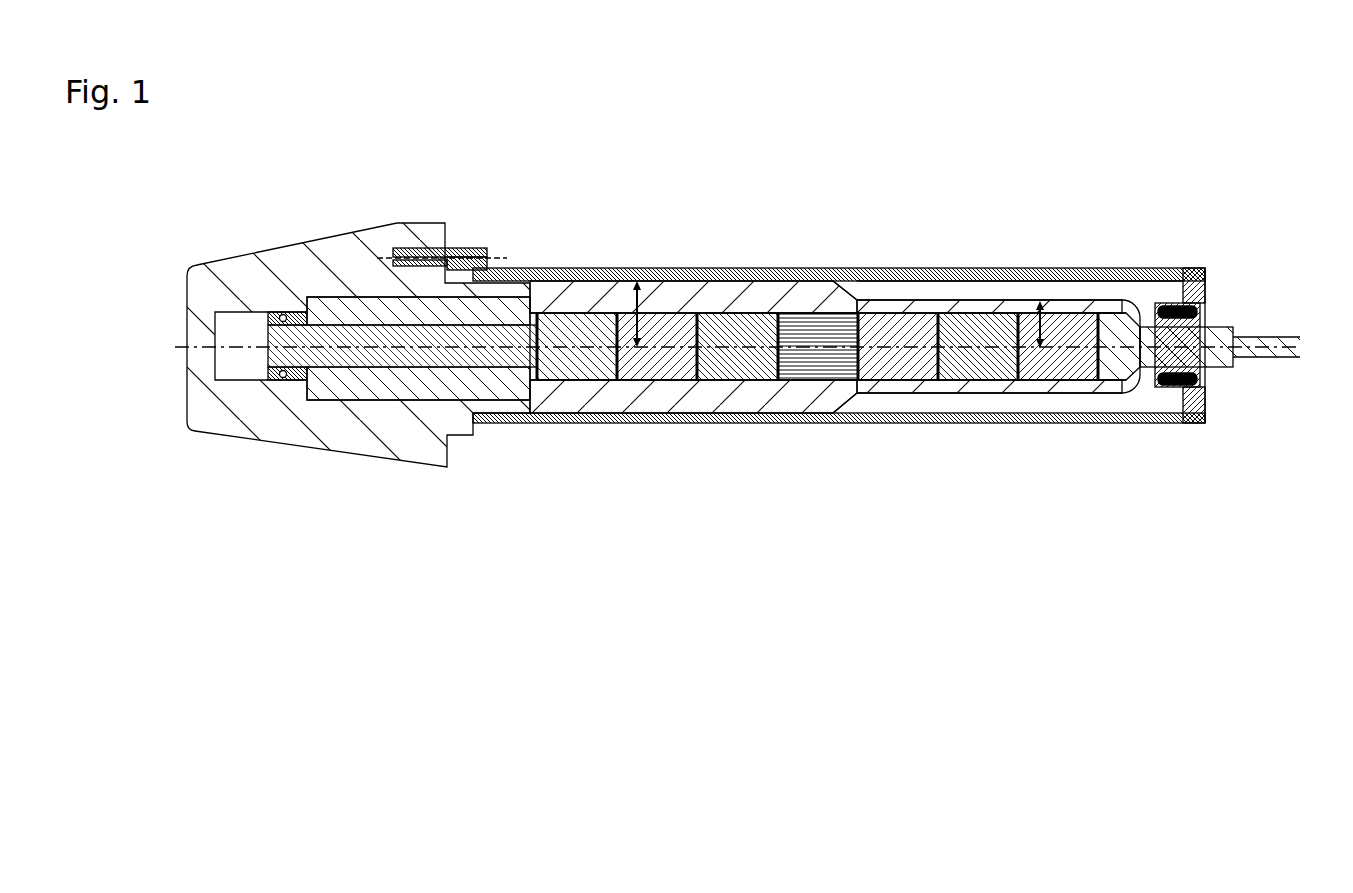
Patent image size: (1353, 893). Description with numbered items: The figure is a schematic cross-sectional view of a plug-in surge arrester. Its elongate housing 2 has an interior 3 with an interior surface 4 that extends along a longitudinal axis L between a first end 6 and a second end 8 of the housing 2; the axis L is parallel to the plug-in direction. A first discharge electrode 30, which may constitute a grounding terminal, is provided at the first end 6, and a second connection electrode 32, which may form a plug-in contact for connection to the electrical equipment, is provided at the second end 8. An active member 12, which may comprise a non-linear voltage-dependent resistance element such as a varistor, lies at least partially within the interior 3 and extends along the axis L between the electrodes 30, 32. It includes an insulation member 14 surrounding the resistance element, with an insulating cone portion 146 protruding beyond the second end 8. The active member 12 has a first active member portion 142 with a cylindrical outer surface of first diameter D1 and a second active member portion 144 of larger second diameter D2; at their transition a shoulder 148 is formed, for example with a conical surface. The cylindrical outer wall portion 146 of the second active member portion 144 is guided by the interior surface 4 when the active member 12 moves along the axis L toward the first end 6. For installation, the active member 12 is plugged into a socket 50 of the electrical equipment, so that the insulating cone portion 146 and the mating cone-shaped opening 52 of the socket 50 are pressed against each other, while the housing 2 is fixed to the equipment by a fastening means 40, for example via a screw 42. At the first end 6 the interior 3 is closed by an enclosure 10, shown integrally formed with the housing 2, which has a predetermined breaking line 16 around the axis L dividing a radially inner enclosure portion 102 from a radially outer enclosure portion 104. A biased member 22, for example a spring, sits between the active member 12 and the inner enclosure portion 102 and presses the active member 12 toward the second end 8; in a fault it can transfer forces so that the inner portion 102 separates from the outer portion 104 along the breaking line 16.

The elongate housing 2 is at (975, 277).
The interior 3 is at (878, 287).
The interior surface 4 is at (895, 280).
The first end 6 is at (1189, 222).
The second end 8 is at (473, 200).
The enclosure 10 is at (1243, 361).
The active member 12 is at (752, 372).
The insulation member 14 is at (756, 362).
The predetermined breaking line 16 is at (1205, 293).
The biased member 22 is at (1180, 390).
The first discharge electrode 30 is at (1133, 383).
The second connection electrode 32 is at (455, 362).
The fastening means 40 is at (458, 250).
The screw 42 is at (425, 256).
The socket 50 is at (333, 252).
The insulating cone-shaped opening 52 is at (357, 300).
The radially inner enclosure portion 102 is at (1200, 312).
The radially outer enclosure portion 104 is at (1193, 410).
The first active member portion 142 is at (1067, 395).
The second active member portion 144 is at (675, 410).
The outer wall portion 146 is at (707, 270).
The shoulder 148 is at (843, 403).
The first diameter D1 is at (1052, 321).
The second diameter D2 is at (622, 299).
The longitudinal axis L is at (183, 348).